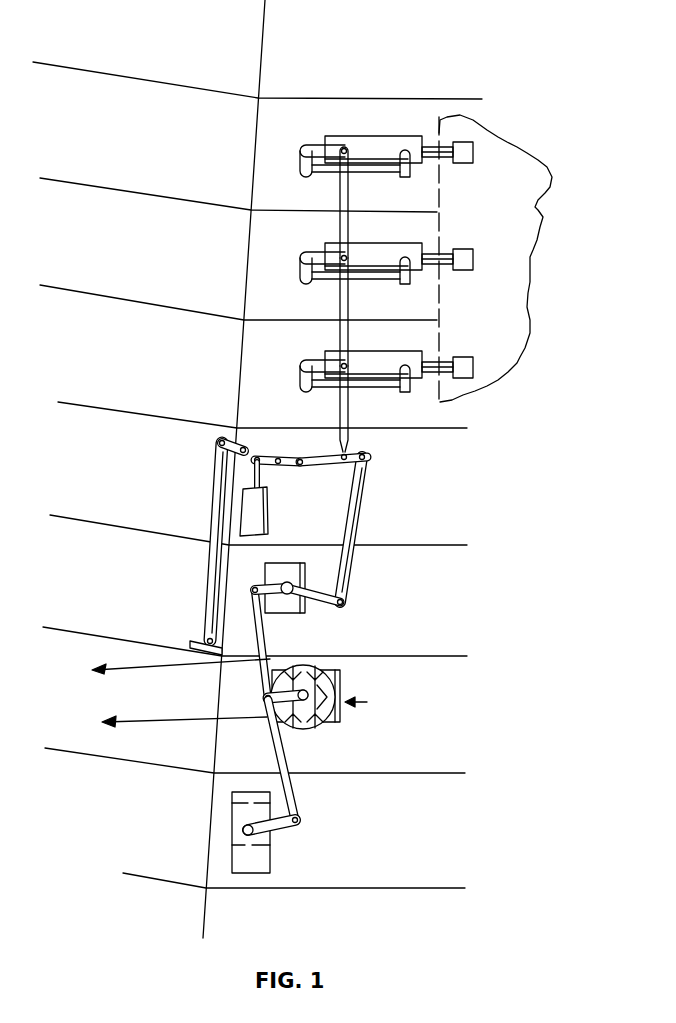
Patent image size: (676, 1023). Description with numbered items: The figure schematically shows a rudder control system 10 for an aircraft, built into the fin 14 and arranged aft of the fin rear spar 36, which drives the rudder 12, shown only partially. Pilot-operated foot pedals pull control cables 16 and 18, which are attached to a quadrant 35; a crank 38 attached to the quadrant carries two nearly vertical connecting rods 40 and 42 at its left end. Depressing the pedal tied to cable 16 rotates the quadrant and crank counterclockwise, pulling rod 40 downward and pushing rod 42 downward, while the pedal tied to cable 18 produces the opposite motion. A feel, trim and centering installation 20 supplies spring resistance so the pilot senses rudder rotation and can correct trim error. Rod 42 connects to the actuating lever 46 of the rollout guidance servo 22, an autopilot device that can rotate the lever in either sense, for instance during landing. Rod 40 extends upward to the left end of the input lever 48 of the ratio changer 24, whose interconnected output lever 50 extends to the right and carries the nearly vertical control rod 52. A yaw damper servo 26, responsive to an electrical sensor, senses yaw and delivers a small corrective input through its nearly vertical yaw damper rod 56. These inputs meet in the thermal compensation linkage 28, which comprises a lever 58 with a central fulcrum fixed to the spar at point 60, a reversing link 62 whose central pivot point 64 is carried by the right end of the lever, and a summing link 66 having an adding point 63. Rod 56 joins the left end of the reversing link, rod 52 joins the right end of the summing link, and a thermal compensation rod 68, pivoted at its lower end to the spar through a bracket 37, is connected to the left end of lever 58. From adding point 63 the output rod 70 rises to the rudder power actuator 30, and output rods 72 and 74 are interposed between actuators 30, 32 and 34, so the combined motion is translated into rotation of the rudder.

The rudder control system 10 is at (499, 623).
The rudder 12 is at (548, 163).
The fin 14 is at (117, 75).
The control cable 16 is at (192, 670).
The control cable 18 is at (145, 716).
The feel, trim and centering installation 20 is at (334, 697).
The rollout guidance servo 22 is at (272, 842).
The ratio changer 24 is at (296, 608).
The yaw damper servo 26 is at (245, 518).
The thermal compensation linkage 28 is at (385, 475).
The rudder power actuator 30 is at (358, 351).
The rudder power actuator 32 is at (422, 243).
The rudder power actuator 34 is at (413, 135).
The quadrant 35 is at (313, 723).
The fin rear spar 36 is at (250, 152).
The bracket 37 is at (203, 640).
The crank 38 is at (265, 694).
The connecting rod 40 is at (264, 617).
The connecting rod 42 is at (293, 795).
The actuating lever 46 is at (279, 828).
The input lever 48 is at (261, 584).
The output lever 50 is at (334, 604).
The control rod 52 is at (362, 492).
The yaw damper rod 56 is at (262, 474).
The lever 58 is at (216, 443).
The fixed pivot point 60 is at (243, 448).
The reversing link 62 is at (298, 459).
The fulcrum or adding point 63 is at (350, 464).
The moving pivot point 64 is at (265, 470).
The summing link 66 is at (370, 457).
The thermal compensation rod 68 is at (219, 476).
The output rod 70 is at (347, 415).
The output rod 72 is at (340, 303).
The output rod 74 is at (340, 200).